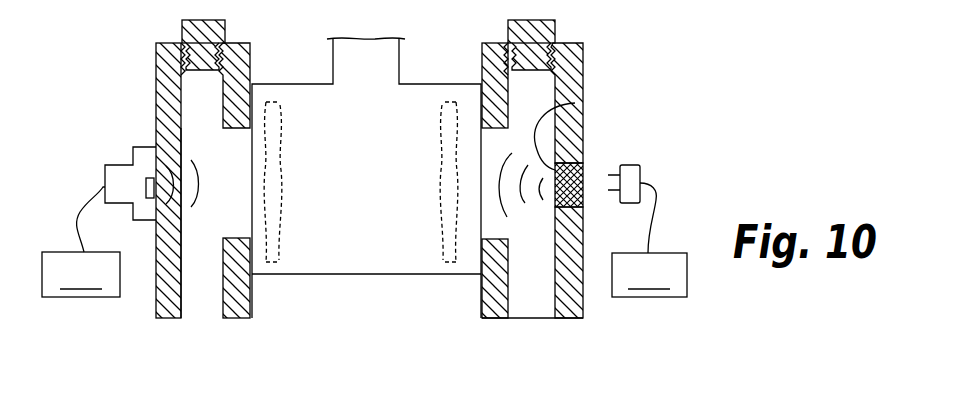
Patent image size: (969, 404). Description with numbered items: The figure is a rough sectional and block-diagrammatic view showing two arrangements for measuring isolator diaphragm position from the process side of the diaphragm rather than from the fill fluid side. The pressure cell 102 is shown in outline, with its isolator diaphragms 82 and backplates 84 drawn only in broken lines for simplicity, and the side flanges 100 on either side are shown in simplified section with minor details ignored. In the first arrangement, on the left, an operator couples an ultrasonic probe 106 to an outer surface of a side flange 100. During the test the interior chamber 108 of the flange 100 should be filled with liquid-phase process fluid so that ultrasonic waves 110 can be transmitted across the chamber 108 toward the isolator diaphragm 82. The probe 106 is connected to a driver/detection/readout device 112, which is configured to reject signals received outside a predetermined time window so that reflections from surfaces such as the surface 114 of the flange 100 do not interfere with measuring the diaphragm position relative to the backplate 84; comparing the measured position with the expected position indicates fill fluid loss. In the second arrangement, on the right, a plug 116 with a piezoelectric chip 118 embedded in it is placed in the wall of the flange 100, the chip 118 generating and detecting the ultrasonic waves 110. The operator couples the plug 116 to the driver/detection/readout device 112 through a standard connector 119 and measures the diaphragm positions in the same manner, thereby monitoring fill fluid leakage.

The isolator diaphragm 82 is at (266, 166).
The backplate 84 is at (281, 198).
The side flange 100 is at (240, 292).
The pressure cell 102 is at (328, 262).
The ultrasonic probe 106 is at (110, 160).
The interior chamber 108 is at (195, 104).
The ultrasonic waves 110 is at (191, 207).
The driver/detection/readout device 112 is at (364, 242).
The surface 114 is at (179, 258).
The plug 116 is at (580, 160).
The piezoelectric chip 118 is at (575, 103).
The standard connector 119 is at (635, 178).